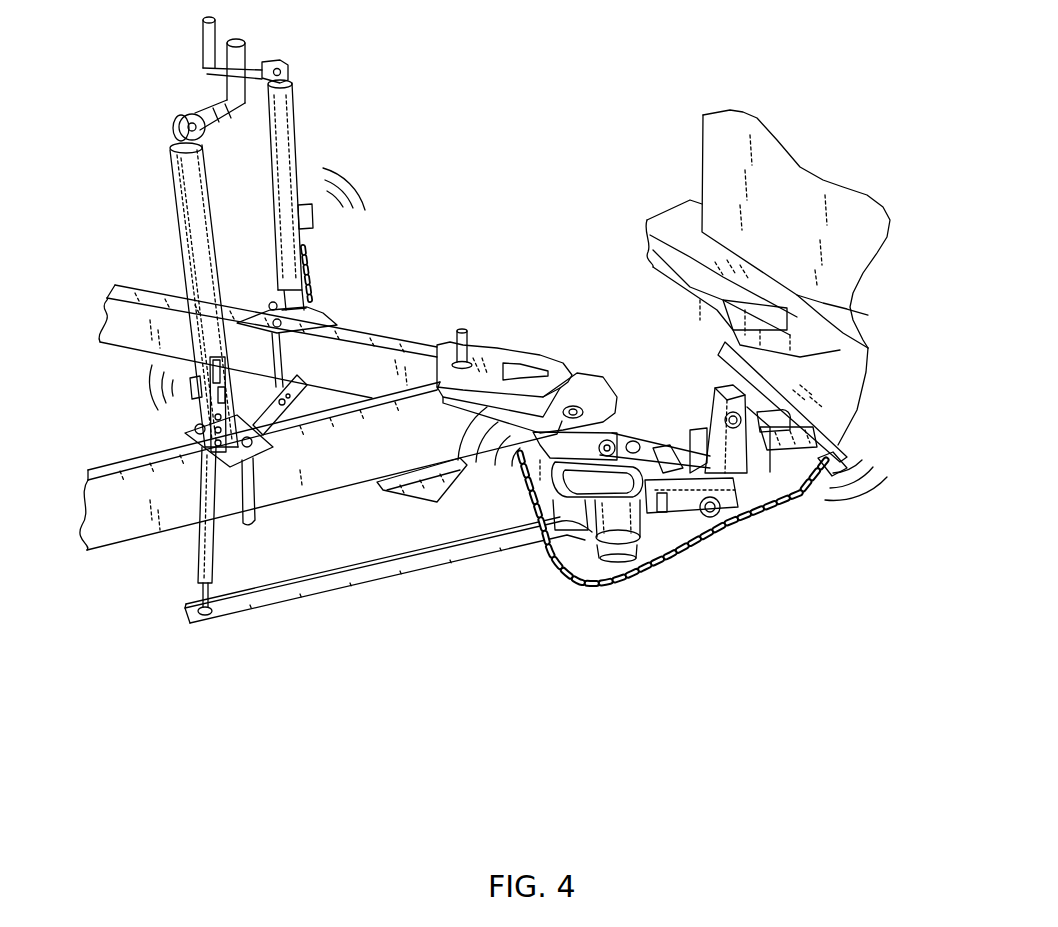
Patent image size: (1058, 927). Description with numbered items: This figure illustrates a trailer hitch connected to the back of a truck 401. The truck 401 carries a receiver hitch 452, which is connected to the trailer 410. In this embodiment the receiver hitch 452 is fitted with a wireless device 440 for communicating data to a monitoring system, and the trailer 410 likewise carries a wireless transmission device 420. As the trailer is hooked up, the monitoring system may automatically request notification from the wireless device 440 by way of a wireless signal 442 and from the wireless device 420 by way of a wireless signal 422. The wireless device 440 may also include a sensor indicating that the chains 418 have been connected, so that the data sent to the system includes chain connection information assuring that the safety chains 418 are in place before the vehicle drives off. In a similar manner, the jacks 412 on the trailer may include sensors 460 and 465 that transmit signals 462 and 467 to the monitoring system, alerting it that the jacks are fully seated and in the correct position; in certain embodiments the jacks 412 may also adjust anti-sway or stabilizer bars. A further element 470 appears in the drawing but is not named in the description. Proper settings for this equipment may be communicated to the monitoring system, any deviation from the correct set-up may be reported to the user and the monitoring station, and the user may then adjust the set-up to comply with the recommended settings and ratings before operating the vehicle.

The truck 401 is at (722, 172).
The trailer 410 is at (370, 353).
The jacks 412 is at (287, 165).
The safety chains 418 is at (628, 583).
The wireless transmission device 420 is at (520, 467).
The wireless signal 422 is at (462, 431).
The wireless device 440 is at (835, 455).
The wireless signal 442 is at (858, 503).
The receiver hitch 452 is at (717, 397).
The sensor 460 is at (308, 215).
The signal 462 is at (365, 188).
The sensor 465 is at (193, 393).
The signal 467 is at (140, 376).
The trailer frame member 470 is at (388, 601).